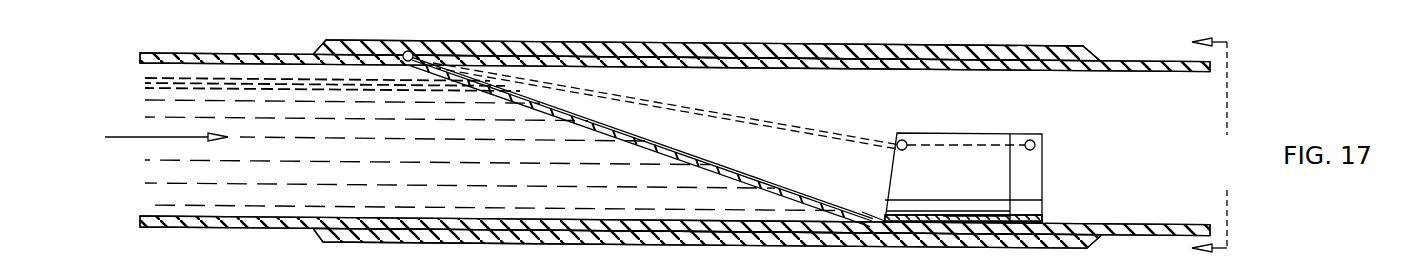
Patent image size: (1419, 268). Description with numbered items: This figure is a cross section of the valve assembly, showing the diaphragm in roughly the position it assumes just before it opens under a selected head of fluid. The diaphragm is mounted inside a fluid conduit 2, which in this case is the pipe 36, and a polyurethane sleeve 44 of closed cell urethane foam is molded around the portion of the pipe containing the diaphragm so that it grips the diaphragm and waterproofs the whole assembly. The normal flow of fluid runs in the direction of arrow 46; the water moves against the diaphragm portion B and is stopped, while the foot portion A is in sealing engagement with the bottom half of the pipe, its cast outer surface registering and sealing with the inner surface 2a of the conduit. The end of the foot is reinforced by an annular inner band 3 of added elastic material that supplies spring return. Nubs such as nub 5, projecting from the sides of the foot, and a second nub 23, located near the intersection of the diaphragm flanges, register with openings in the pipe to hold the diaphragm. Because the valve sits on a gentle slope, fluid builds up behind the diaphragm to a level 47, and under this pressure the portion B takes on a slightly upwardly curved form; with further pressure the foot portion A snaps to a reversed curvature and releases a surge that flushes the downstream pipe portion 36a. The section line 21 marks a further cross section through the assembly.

The fluid conduit 2 is at (1000, 223).
The inner surface of fluid conduit 2a is at (957, 218).
The annular inner band 3 is at (1030, 212).
The nub 5 is at (1042, 131).
The section line 21 is at (1230, 145).
The nub 23 is at (903, 147).
The pipe 36 is at (1155, 70).
The pipe portion downstream of diaphragm 36a is at (1123, 205).
The polyurethane sleeve 44 is at (1036, 48).
The arrow indicating direction of normal fluid flow 46 is at (120, 137).
The fluid level 47 is at (212, 79).
The foot portion of diaphragm A is at (943, 219).
The diaphragm portion B is at (556, 118).